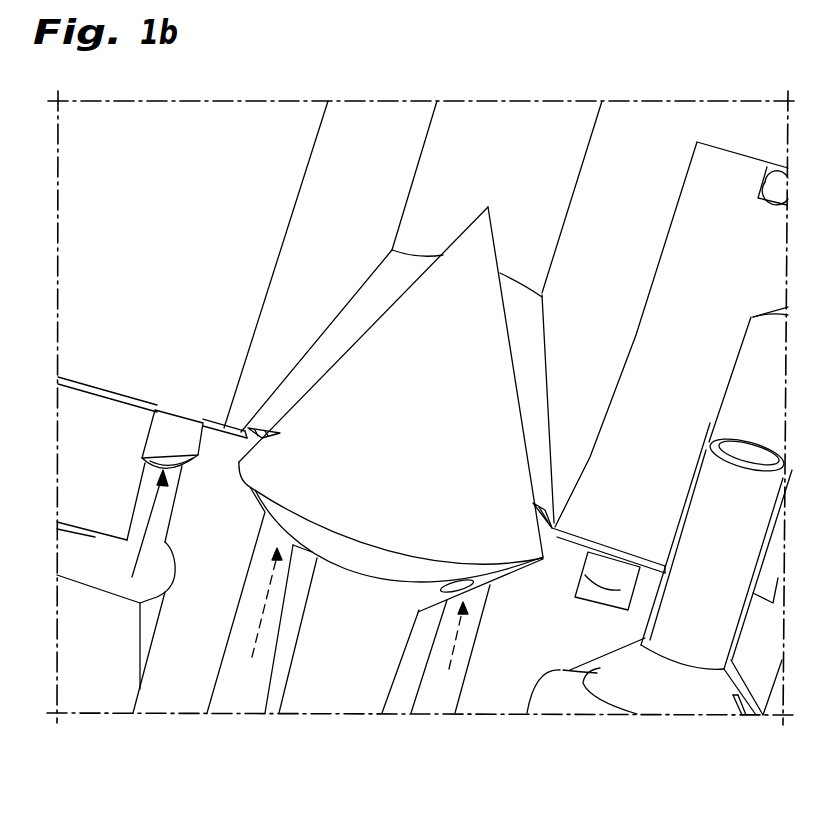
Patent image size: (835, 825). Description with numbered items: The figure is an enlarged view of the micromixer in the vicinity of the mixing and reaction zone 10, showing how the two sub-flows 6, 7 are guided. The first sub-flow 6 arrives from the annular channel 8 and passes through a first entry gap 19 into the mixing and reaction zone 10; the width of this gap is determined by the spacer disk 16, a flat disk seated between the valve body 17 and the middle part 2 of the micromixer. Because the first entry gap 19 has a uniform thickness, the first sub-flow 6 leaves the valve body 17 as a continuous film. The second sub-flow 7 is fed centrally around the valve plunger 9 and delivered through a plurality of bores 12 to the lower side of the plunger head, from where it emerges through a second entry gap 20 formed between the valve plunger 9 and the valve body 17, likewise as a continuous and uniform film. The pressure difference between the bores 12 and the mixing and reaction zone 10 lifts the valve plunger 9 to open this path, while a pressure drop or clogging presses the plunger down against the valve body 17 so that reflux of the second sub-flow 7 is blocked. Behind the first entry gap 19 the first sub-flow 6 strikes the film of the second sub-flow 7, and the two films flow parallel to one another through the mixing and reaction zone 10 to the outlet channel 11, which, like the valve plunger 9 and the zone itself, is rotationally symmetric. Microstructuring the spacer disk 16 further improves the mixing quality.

The middle part 2 is at (117, 237).
The first sub-flow 6 is at (119, 588).
The second sub-flow 7 is at (345, 626).
The annular channel 8 is at (172, 440).
The valve plunger 9 is at (318, 750).
The mixing and reaction zone 10 is at (533, 370).
The outlet channel 11 is at (508, 148).
The bores 12 is at (230, 702).
The spacer disk 16 is at (620, 547).
The valve body 17 is at (87, 433).
The first entry gap 19 is at (543, 513).
The second entry gap 20 is at (488, 583).